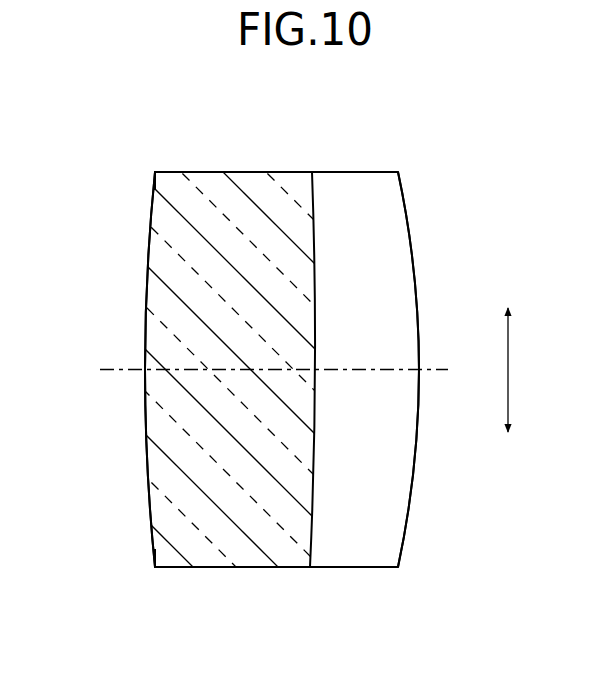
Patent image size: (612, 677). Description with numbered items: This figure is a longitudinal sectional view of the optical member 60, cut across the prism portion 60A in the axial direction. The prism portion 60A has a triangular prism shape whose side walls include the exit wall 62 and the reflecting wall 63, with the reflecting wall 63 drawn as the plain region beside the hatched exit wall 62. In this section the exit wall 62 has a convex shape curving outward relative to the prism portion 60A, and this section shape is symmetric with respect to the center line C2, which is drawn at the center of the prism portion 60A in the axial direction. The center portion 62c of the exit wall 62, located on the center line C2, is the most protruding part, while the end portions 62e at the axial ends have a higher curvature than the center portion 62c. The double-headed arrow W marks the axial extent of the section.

The optical member 60 is at (222, 134).
The prism portion 60A is at (285, 168).
The exit wall 62 is at (146, 253).
The center portion 62c is at (145, 373).
The end portions 62e is at (152, 182).
The reflecting wall 63 is at (383, 288).
The center line C2 is at (258, 373).
The width W is at (524, 370).